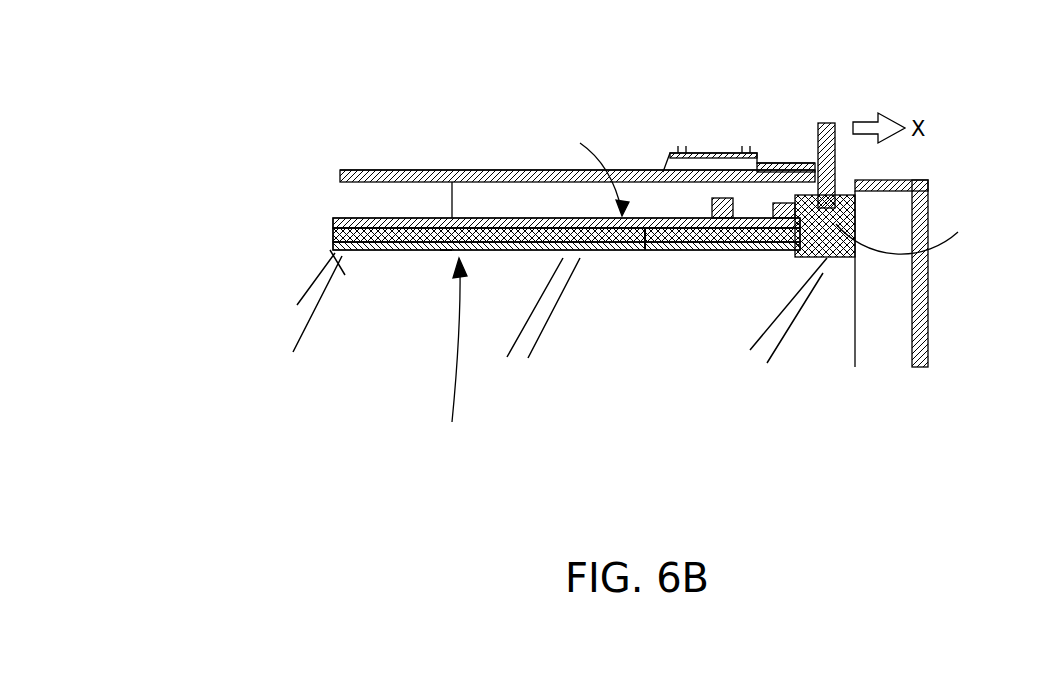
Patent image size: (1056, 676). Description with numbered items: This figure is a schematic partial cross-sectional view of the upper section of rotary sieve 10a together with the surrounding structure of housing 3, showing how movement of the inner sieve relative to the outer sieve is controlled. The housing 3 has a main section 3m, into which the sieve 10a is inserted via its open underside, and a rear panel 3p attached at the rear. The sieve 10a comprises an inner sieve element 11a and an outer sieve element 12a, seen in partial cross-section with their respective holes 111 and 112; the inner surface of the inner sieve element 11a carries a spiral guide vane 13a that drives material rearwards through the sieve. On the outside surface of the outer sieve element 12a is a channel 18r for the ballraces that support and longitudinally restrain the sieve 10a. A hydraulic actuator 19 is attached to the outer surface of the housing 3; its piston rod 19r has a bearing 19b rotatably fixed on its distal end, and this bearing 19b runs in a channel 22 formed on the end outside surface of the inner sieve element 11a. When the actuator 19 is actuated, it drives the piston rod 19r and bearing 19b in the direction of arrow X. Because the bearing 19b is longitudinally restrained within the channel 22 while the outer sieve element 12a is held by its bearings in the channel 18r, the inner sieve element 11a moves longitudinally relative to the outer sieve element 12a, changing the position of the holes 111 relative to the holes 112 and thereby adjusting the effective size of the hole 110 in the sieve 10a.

The housing 3 is at (368, 168).
The main section 3m is at (435, 168).
The rear panel 3p is at (925, 334).
The sieve 10a is at (333, 228).
The inner sieve element 11a is at (323, 241).
The outer sieve element 12a is at (340, 220).
The spiral guide vane 13a is at (320, 247).
The channel 18r is at (750, 240).
The hydraulic actuator 19 is at (666, 168).
The piston rod 19r is at (789, 168).
The bearing 19b is at (833, 123).
The channel 22 is at (930, 251).
The hole 110 is at (530, 287).
The holes 111 is at (440, 250).
The holes 112 is at (453, 172).